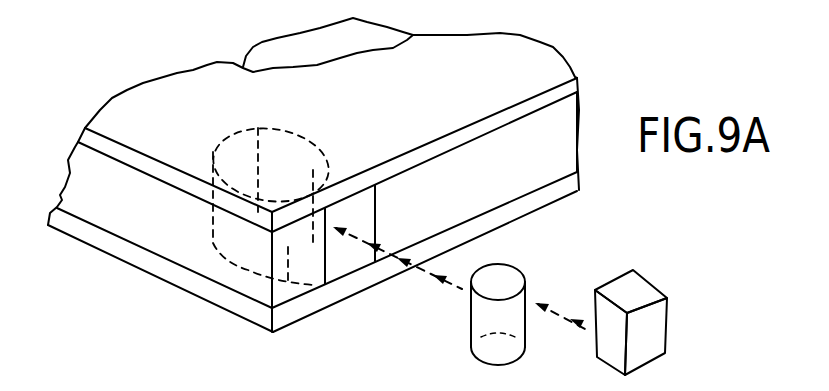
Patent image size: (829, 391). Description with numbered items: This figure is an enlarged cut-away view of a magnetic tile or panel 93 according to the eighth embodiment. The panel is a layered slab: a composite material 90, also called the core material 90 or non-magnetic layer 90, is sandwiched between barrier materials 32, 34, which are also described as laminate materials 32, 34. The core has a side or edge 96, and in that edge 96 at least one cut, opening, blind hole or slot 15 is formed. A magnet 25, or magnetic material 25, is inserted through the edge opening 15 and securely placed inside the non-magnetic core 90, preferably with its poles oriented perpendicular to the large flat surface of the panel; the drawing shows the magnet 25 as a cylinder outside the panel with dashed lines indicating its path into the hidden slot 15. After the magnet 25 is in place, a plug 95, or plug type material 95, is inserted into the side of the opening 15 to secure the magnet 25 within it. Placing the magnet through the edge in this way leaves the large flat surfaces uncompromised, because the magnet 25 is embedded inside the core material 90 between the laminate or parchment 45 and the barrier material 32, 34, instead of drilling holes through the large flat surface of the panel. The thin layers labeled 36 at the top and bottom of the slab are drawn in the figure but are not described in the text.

The magnetic tile or panel 93 is at (126, 35).
The laminate or parchment 45 is at (283, 50).
The barrier material 34 is at (547, 55).
The foam layer 36 is at (570, 87).
The composite material 90 is at (563, 128).
The edge 96 is at (557, 158).
The barrier material 32 is at (542, 197).
The opening 15 is at (300, 163).
The magnet 25 is at (470, 331).
The plug 95 is at (643, 290).